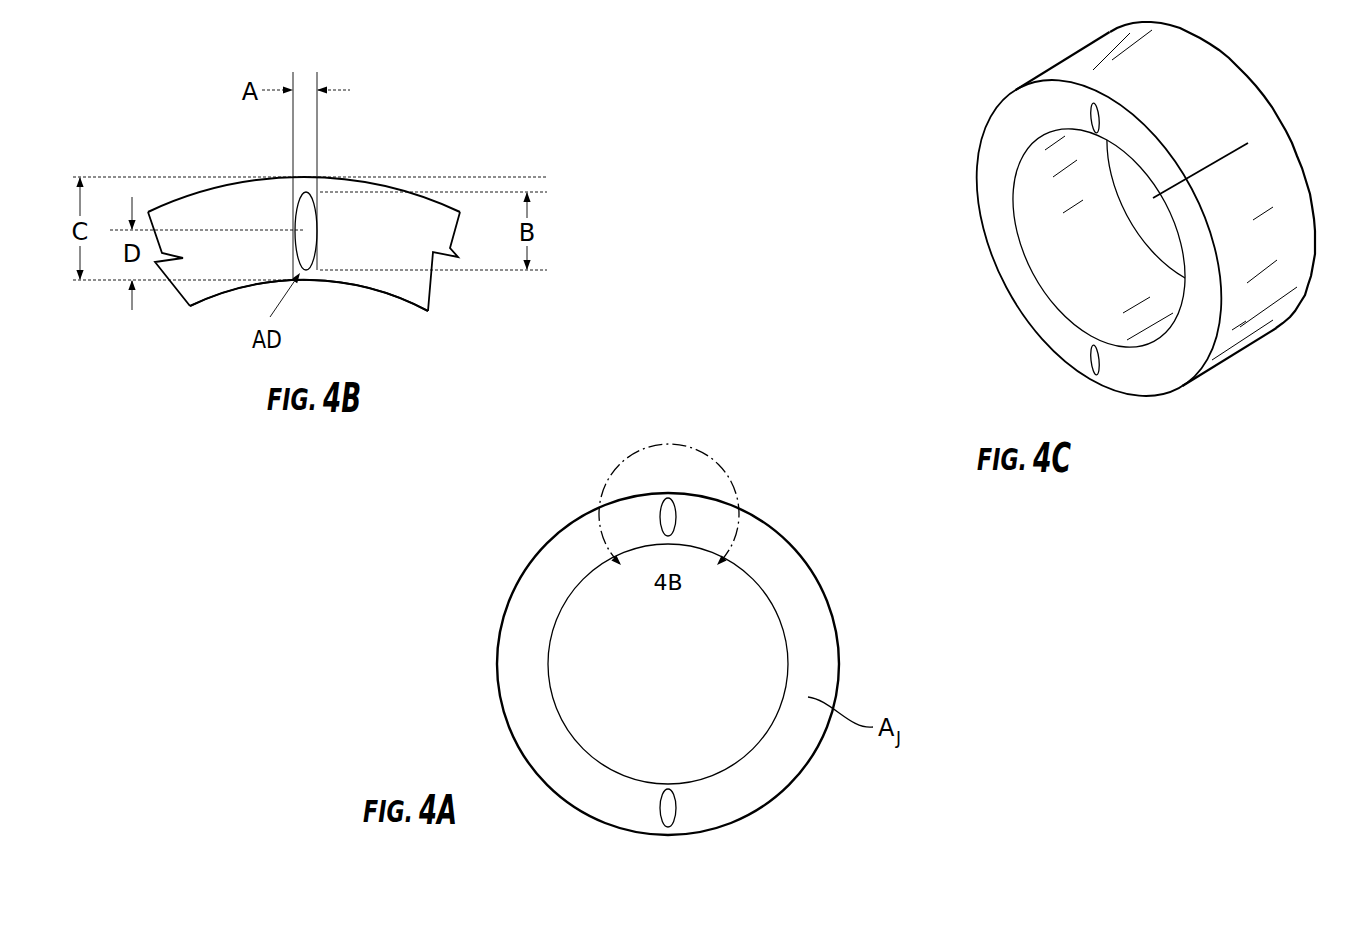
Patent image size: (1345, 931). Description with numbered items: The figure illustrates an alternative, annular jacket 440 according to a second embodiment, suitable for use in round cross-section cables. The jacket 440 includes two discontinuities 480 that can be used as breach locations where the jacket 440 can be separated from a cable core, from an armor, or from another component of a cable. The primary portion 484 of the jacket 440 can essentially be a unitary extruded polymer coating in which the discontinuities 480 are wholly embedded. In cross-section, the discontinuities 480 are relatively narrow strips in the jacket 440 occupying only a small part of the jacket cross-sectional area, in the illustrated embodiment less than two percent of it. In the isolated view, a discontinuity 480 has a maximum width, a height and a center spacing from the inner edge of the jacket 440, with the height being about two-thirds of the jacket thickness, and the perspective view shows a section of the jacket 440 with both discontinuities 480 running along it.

In FIG. 4B, the annular jacket 440 is at (228, 157).
In FIG. 4C, the annular jacket 440 is at (991, 71).
In FIG. 4B, the discontinuities 480 is at (307, 222).
In FIG. 4C, the discontinuities 480 is at (1086, 124).
In FIG. 4A, the discontinuities 480 is at (660, 808).
In FIG. 4B, the primary portion 484 is at (420, 290).
In FIG. 4C, the primary portion 484 is at (988, 205).
In FIG. 4A, the primary portion 484 is at (553, 557).